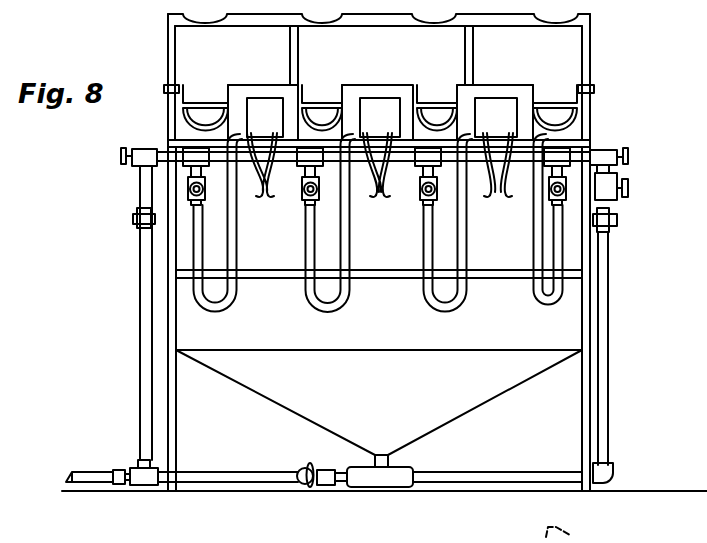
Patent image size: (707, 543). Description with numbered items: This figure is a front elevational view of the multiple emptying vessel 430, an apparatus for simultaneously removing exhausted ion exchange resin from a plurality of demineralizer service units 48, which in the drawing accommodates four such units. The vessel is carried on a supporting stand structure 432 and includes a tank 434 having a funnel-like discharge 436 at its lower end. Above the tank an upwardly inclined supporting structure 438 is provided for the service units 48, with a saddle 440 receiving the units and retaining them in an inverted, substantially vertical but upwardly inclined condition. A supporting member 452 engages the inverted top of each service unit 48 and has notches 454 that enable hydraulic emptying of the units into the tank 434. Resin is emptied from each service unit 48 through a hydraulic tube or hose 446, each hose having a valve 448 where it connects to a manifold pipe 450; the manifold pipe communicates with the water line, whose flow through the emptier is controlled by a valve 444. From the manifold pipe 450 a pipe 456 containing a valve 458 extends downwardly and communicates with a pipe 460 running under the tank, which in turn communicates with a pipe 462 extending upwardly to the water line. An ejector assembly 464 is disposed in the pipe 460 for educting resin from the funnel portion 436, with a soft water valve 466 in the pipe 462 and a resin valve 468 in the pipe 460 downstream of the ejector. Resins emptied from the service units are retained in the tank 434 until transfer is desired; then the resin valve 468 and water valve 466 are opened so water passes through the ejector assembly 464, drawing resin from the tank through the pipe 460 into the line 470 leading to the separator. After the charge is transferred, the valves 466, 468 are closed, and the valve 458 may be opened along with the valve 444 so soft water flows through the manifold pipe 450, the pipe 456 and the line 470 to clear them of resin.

The multiple emptying vessel 430 is at (603, 113).
The supporting stand structure 432 is at (585, 310).
The tank 434 is at (183, 256).
The funnel-like discharge 436 is at (238, 376).
The upwardly inclined supporting structure 438 is at (585, 58).
The saddle 440 is at (590, 22).
The valve 444 is at (628, 156).
The hydraulic tube or hose 446 is at (423, 248).
The valve 448 is at (418, 187).
The manifold pipe 450 is at (278, 152).
The supporting member 452 is at (258, 85).
The notches 454 is at (187, 90).
The pipe 456 is at (140, 242).
The valve 458 is at (120, 155).
The pipe 460 is at (240, 483).
The pipe 462 is at (605, 375).
The ejector assembly 464 is at (400, 478).
The valve 466 is at (630, 186).
The valve 468 is at (303, 488).
The line 470 is at (82, 472).
The demineralizer service unit 48 is at (545, 537).